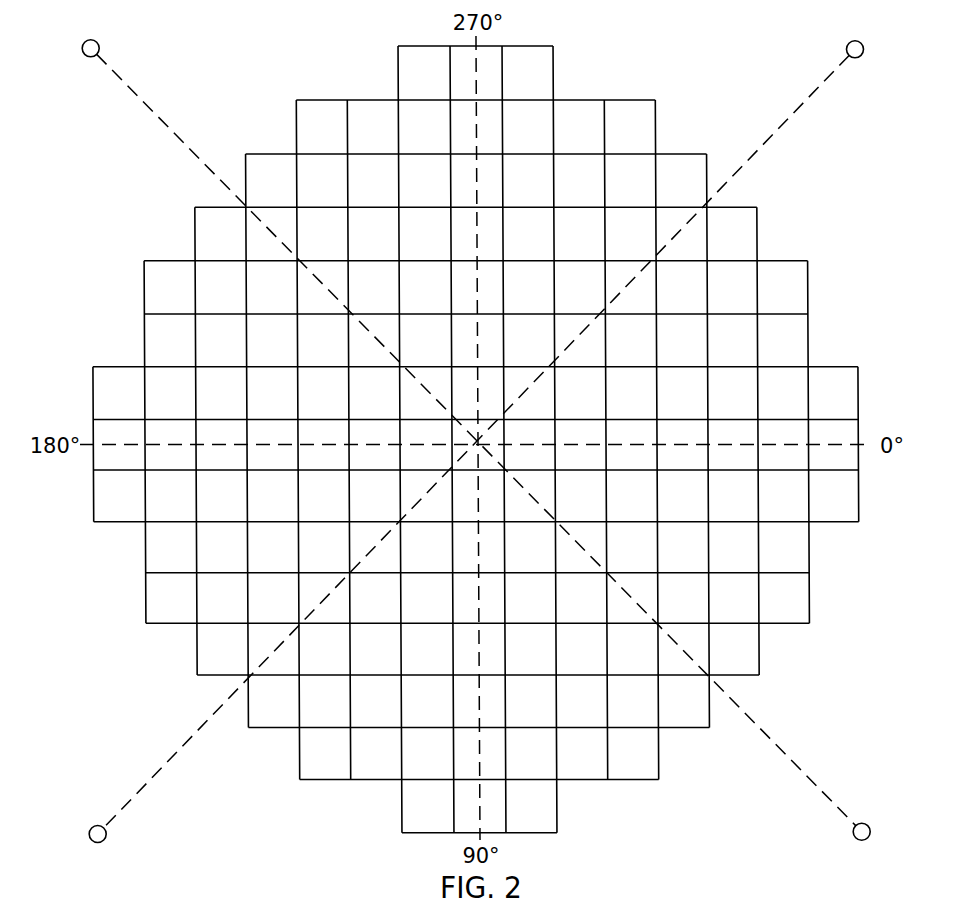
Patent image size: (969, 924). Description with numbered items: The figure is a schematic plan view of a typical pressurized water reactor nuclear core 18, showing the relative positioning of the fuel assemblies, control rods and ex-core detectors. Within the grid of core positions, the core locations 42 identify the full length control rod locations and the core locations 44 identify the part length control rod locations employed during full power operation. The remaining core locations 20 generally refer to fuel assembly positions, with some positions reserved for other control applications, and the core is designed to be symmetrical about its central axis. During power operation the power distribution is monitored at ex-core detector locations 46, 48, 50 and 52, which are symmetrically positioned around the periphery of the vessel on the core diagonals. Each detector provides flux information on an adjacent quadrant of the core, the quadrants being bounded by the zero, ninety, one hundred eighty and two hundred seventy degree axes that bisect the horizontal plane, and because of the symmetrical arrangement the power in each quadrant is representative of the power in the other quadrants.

The nuclear core 18 is at (260, 791).
The core locations 20 is at (284, 298).
The core locations 42 is at (476, 441).
The core locations 44 is at (476, 438).
The ex-core detector location 46 is at (100, 826).
The ex-core detector location 48 is at (857, 823).
The ex-core detector location 50 is at (99, 47).
The ex-core detector location 52 is at (846, 48).